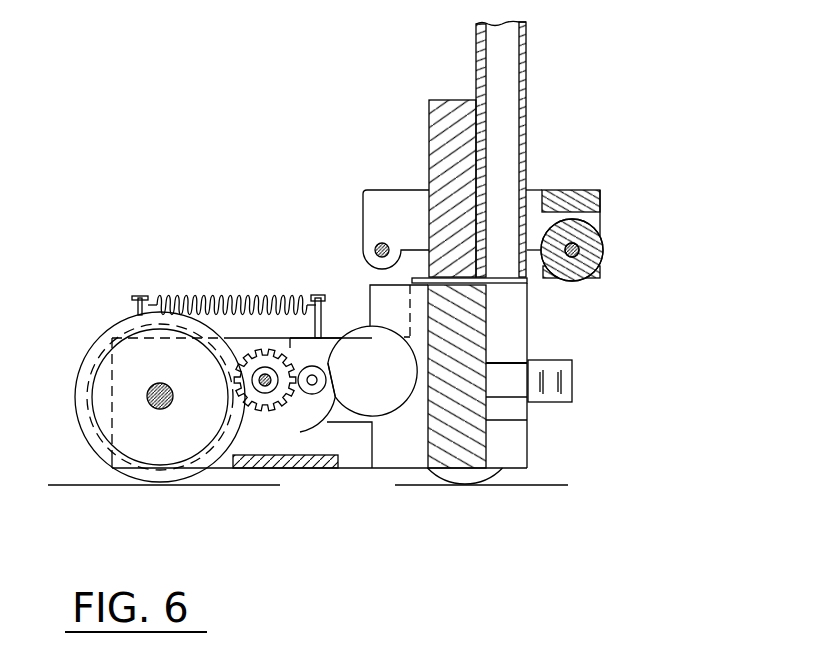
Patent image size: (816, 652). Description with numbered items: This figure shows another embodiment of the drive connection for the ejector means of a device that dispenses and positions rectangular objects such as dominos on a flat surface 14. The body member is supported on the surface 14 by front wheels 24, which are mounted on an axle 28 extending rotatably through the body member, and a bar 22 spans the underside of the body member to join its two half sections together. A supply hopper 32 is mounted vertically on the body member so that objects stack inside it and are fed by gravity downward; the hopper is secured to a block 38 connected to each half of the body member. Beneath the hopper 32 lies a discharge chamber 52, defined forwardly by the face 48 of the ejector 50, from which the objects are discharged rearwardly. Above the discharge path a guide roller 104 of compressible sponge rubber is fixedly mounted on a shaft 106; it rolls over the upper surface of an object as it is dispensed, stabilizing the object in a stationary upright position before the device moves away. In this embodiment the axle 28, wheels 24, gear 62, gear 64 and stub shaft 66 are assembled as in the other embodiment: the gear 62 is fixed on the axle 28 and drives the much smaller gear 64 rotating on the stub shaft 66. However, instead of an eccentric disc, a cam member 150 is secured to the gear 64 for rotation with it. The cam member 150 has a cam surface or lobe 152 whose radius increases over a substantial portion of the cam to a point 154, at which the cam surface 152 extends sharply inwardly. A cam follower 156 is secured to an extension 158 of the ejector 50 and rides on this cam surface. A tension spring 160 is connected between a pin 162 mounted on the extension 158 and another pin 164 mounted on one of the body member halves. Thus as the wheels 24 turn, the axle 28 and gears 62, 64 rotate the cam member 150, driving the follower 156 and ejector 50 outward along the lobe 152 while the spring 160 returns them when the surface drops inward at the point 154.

The flat surface 14 is at (80, 486).
The bar 22 is at (282, 470).
The front wheels 24 is at (78, 367).
The axle 28 is at (155, 406).
The supply hopper 32 is at (525, 61).
The block 38 is at (429, 115).
The face of the ejector 48 is at (528, 420).
The ejector 50 is at (472, 447).
The discharge chamber 52 is at (505, 325).
The gear 62 is at (120, 320).
The gear 64 is at (253, 348).
The stub shaft 66 is at (262, 389).
The roller 104 is at (594, 268).
The shaft 106 is at (580, 245).
The cam member 150 is at (290, 415).
The cam surface 152 is at (332, 410).
The point 154 is at (333, 398).
The cam follower 156 is at (318, 370).
The extension 158 is at (331, 350).
The tension spring 160 is at (212, 298).
The pin 162 is at (316, 295).
The pin 164 is at (137, 295).